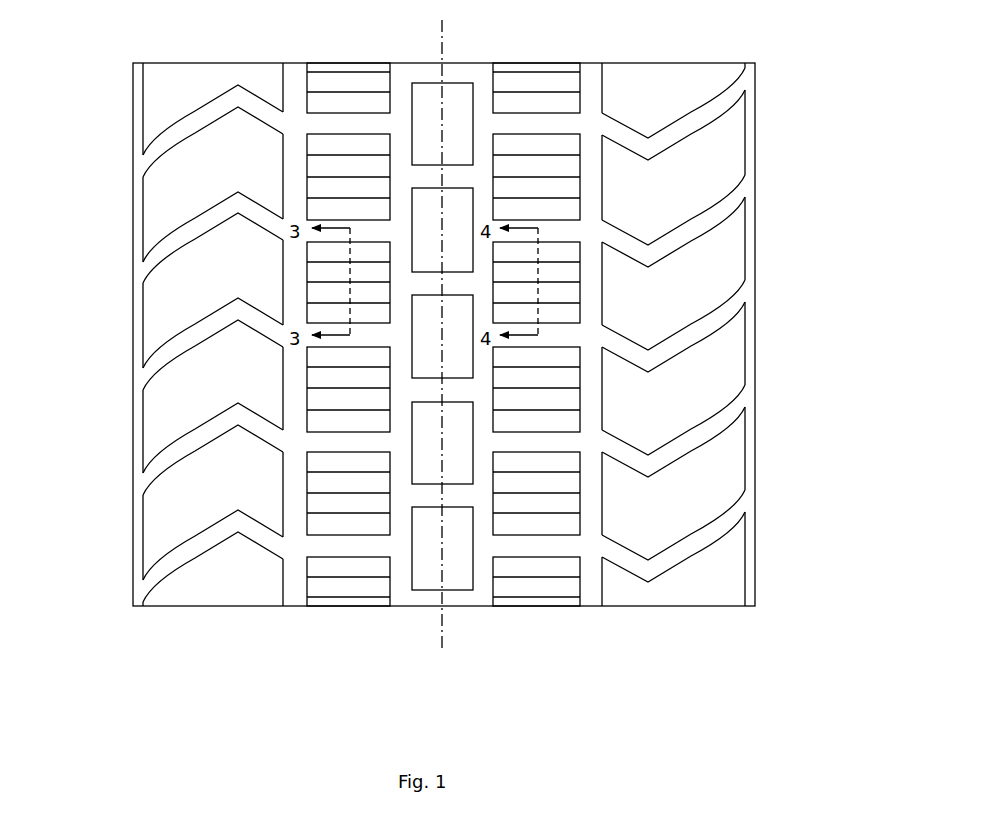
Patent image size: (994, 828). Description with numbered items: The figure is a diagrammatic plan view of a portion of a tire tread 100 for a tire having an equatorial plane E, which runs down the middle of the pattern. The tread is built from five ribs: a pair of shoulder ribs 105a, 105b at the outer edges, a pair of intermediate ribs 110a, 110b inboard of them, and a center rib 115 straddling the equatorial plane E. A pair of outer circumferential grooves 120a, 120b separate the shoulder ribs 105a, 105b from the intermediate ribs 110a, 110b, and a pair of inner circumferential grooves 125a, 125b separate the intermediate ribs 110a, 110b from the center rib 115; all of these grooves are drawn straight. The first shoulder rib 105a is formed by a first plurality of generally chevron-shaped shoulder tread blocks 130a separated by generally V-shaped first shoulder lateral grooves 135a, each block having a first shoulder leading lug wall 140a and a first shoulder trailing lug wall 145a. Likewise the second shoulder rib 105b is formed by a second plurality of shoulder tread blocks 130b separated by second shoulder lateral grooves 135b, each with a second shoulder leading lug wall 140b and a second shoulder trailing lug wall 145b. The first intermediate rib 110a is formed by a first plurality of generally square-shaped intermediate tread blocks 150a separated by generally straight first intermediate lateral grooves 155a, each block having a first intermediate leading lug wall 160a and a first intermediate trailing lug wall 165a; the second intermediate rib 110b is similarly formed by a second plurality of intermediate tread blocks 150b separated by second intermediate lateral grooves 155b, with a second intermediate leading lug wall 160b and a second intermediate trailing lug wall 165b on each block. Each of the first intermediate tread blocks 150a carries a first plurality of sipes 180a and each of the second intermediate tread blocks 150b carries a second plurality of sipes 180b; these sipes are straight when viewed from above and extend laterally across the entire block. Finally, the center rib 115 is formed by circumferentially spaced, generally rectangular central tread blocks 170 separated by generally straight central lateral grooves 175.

The tire tread 100 is at (725, 660).
The first shoulder rib 105a is at (216, 617).
The second shoulder rib 105b is at (727, 622).
The first intermediate rib 110a is at (338, 618).
The second intermediate rib 110b is at (546, 618).
The center rib 115 is at (452, 70).
The first outer circumferential groove 120a is at (295, 75).
The second outer circumferential groove 120b is at (591, 75).
The first inner circumferential groove 125a is at (403, 80).
The second inner circumferential groove 125b is at (482, 85).
The first plurality of shoulder tread blocks 130a is at (160, 94).
The second plurality of shoulder tread blocks 130b is at (688, 75).
The first shoulder lateral grooves 135a is at (187, 226).
The second shoulder lateral grooves 135b is at (722, 112).
The first shoulder leading lug wall 140a is at (173, 355).
The second shoulder leading lug wall 140b is at (695, 357).
The first shoulder trailing lug wall 145a is at (173, 433).
The second shoulder trailing lug wall 145b is at (693, 440).
The first plurality of intermediate tread blocks 150a is at (366, 602).
The second plurality of intermediate tread blocks 150b is at (562, 598).
The first intermediate lateral grooves 155a is at (333, 545).
The second intermediate lateral grooves 155b is at (540, 548).
The first intermediate leading lug wall 160a is at (348, 347).
The second intermediate leading lug wall 160b is at (590, 328).
The first intermediate trailing lug wall 165a is at (362, 432).
The second intermediate trailing lug wall 165b is at (590, 416).
The central tread blocks 170 is at (427, 92).
The central lateral grooves 175 is at (463, 180).
The first plurality of sipes 180a is at (332, 282).
The second plurality of sipes 180b is at (558, 198).
The equatorial plane E is at (447, 643).